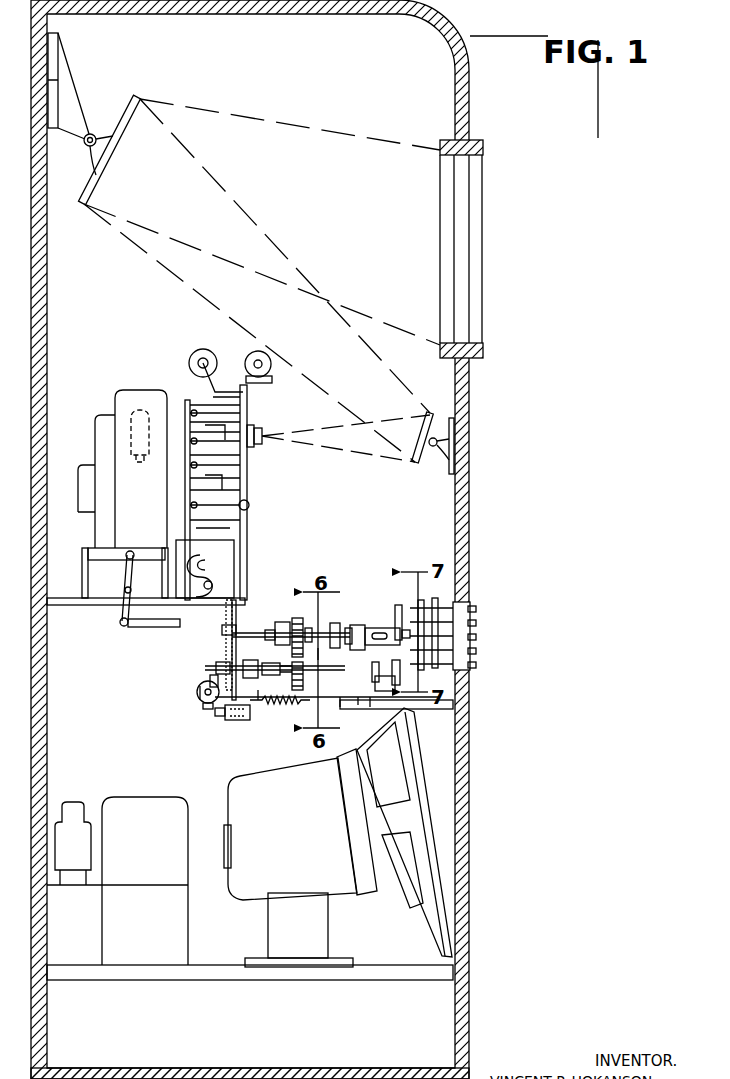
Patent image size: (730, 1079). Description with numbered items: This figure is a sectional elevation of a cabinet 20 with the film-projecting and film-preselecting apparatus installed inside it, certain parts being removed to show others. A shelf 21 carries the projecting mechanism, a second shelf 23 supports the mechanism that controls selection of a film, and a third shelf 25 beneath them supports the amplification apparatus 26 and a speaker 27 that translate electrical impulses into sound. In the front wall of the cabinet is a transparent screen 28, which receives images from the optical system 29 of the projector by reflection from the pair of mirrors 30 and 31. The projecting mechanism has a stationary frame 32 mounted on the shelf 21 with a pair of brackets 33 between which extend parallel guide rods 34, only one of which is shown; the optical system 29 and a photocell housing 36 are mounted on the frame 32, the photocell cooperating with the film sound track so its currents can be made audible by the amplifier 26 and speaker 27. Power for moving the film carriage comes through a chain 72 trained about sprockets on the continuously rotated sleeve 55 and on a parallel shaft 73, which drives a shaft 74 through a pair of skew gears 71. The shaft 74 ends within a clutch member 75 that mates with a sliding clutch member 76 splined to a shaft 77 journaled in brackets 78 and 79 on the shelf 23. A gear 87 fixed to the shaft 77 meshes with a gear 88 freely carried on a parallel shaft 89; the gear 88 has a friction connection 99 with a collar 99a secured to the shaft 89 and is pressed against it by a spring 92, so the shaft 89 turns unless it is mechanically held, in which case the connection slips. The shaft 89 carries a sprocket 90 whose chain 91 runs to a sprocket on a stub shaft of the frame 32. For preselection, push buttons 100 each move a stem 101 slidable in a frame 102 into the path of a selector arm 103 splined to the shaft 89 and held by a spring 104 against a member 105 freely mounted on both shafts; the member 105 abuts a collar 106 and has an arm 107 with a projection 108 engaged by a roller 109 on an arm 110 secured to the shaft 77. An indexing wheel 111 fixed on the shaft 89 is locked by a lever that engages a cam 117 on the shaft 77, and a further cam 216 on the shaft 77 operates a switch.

The cabinet 20 is at (470, 553).
The shelf 21 is at (84, 612).
The second shelf 23 is at (455, 707).
The third shelf 25 is at (213, 981).
The amplification apparatus 26 is at (117, 881).
The speaker 27 is at (300, 858).
The transparent screen 28 is at (470, 252).
The optical system 29 is at (257, 428).
The mirror 30 is at (422, 466).
The mirror 31 is at (140, 97).
The stationary frame 32 is at (243, 473).
The brackets 33 is at (83, 580).
The guide rods 34 is at (111, 562).
The photocell housing 36 is at (250, 504).
The continuously rotated sleeve 55 is at (232, 721).
The skew gears 71 is at (202, 698).
The chain 72 is at (197, 690).
The shaft 73 is at (207, 705).
The shaft 74 is at (226, 664).
The clutch member 75 is at (250, 662).
The sliding clutch member 76 is at (276, 662).
The shaft 77 is at (375, 664).
The bracket 78 is at (336, 626).
The bracket 79 is at (395, 663).
The gear 87 is at (272, 705).
The gear 88 is at (298, 618).
The shaft 89 is at (349, 626).
The sprocket 90 is at (225, 638).
The chain 91 is at (228, 618).
The spring 92 is at (308, 628).
The friction connection 99 is at (278, 620).
The collar 99a is at (272, 630).
The push buttons 100 is at (472, 607).
The stem 101 is at (436, 600).
The frame 102 is at (460, 603).
The selector arm 103 is at (403, 630).
The spring 104 is at (396, 605).
The member 105 is at (365, 626).
The collar 106 is at (357, 622).
The arm 107 is at (378, 680).
The projection 108 is at (370, 707).
The roller 109 is at (345, 705).
The arm 110 is at (360, 710).
The indexing wheel 111 is at (332, 622).
The cam 117 is at (282, 722).
The cam 216 is at (422, 742).